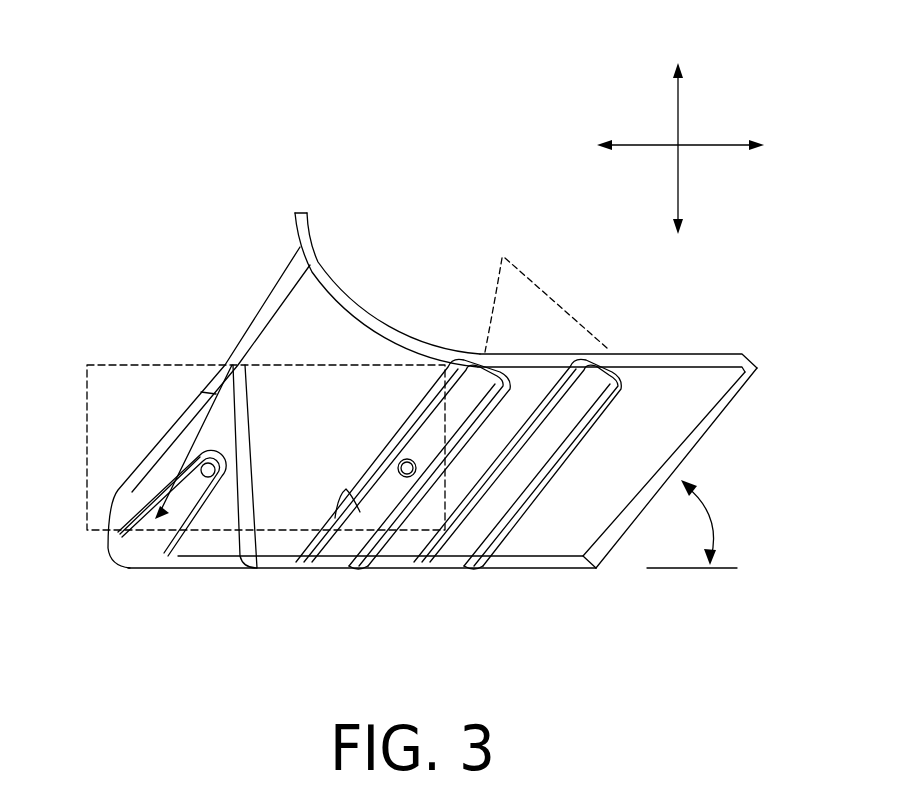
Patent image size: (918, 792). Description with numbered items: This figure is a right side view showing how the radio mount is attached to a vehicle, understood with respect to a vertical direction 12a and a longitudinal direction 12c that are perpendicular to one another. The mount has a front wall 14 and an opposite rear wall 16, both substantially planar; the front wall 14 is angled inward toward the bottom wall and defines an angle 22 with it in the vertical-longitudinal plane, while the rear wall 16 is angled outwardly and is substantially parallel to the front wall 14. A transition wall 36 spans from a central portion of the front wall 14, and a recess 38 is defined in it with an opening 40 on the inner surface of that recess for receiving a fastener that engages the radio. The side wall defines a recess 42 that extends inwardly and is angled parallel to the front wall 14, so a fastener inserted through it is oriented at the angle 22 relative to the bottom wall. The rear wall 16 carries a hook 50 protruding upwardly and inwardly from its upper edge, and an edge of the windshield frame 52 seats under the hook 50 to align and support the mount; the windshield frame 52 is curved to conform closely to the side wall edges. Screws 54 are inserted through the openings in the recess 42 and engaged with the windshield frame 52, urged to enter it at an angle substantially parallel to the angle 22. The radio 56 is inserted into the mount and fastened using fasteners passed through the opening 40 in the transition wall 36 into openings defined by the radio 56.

The vertical direction 12a is at (680, 93).
The longitudinal direction 12c is at (723, 145).
The front wall 14 is at (257, 317).
The rear wall 16 is at (703, 438).
The angle 22 is at (710, 520).
The transition wall 36 is at (200, 443).
The recess 38 is at (118, 540).
The opening 40 is at (208, 478).
The recess 42 is at (347, 490).
The hook 50 is at (747, 357).
The windshield frame 52 is at (362, 313).
The screws 54 is at (546, 291).
The radio 56 is at (110, 362).